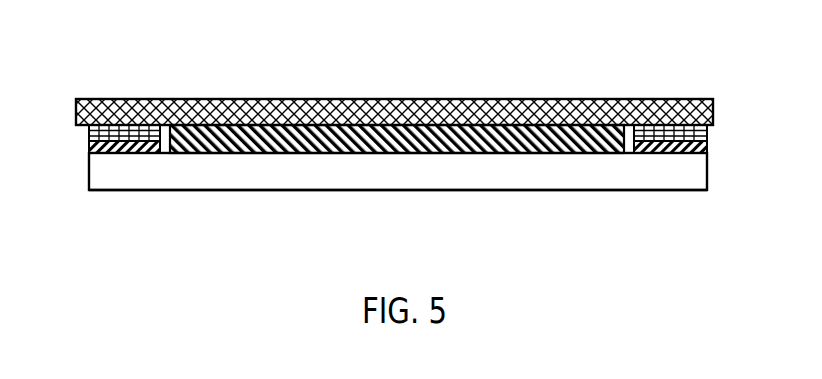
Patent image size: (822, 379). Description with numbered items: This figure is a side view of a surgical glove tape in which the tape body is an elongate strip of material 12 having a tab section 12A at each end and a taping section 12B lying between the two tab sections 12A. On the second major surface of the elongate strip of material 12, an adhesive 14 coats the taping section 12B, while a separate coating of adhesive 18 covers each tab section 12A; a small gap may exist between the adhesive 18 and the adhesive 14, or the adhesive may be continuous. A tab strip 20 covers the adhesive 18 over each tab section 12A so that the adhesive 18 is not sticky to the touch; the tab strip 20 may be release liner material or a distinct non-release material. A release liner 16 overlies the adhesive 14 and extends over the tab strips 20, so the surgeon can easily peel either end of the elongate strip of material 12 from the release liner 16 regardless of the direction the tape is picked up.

The elongate strip of material 12 is at (707, 177).
The tab section 12A is at (121, 200).
The taping section 12B is at (384, 205).
The adhesive 14 is at (545, 153).
The release liner 16 is at (683, 99).
The adhesive 18 is at (89, 145).
The tab strip 20 is at (89, 127).